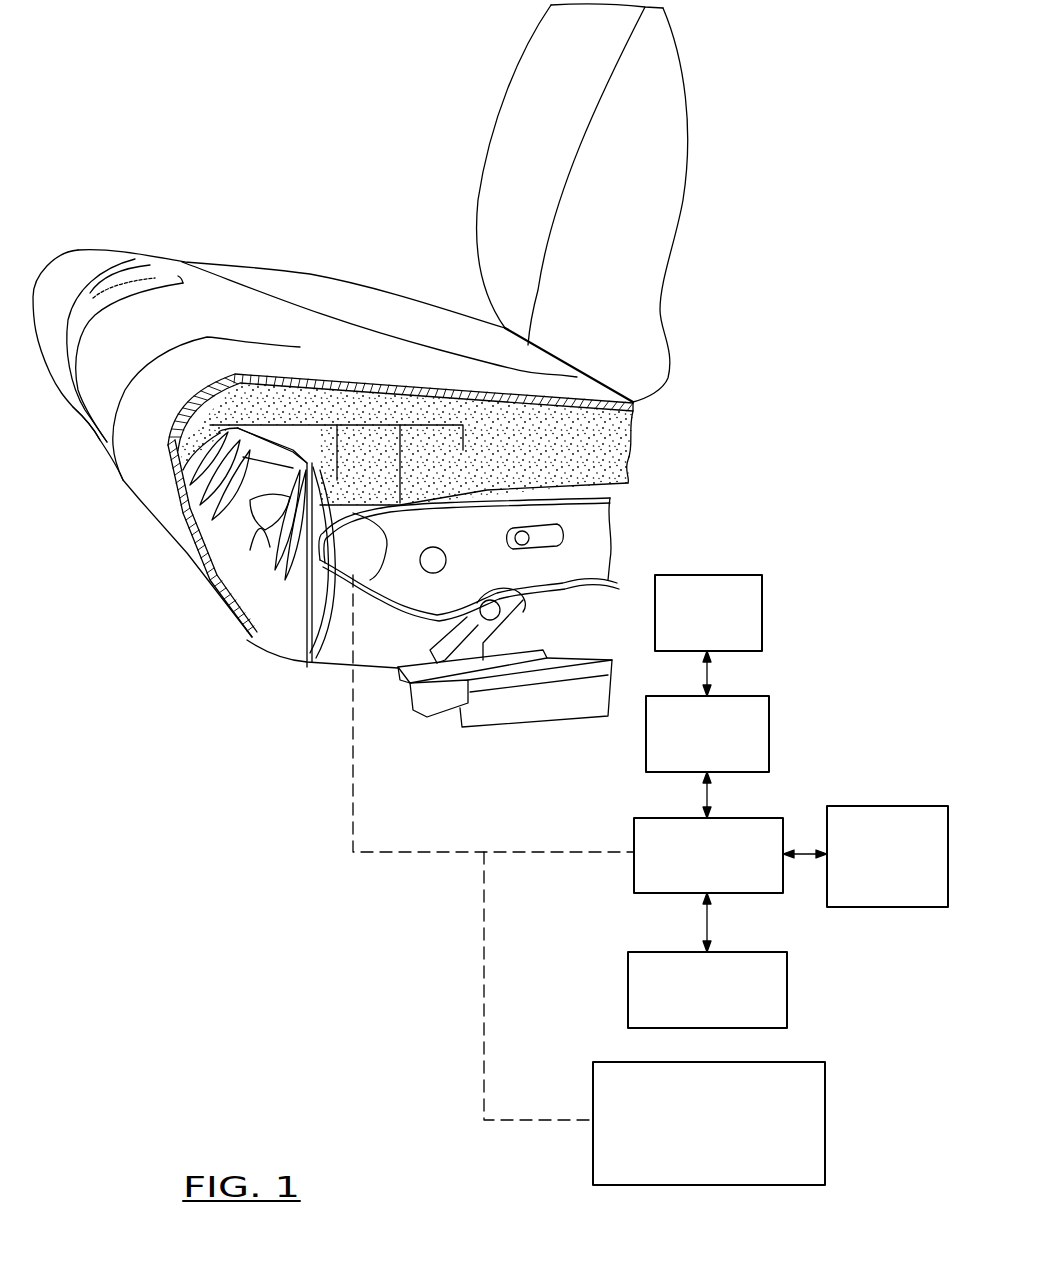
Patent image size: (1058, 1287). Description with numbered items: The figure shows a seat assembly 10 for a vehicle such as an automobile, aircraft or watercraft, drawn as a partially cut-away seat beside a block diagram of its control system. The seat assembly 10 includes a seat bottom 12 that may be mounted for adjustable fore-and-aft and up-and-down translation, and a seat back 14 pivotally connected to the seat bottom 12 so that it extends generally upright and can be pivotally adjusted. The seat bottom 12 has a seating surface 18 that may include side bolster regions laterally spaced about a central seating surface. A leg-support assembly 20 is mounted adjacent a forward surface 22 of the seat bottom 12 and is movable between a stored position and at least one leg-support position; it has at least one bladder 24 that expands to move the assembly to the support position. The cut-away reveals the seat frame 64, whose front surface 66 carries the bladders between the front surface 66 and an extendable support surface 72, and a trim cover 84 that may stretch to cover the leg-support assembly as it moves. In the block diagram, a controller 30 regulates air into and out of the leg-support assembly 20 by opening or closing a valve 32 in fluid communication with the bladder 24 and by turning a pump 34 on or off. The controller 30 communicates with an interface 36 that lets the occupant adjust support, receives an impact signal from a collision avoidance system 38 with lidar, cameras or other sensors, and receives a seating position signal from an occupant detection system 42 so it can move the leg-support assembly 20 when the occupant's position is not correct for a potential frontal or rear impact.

The seat assembly 10 is at (815, 119).
The seat bottom 12 is at (460, 367).
The seat back 14 is at (503, 107).
The seating surface 18 is at (300, 372).
The leg-support assembly 20 is at (98, 440).
The forward surface 22 is at (245, 322).
The bladder 24 is at (297, 573).
The controller 30 is at (783, 818).
The valve 32 is at (769, 696).
The pump 34 is at (762, 575).
The interface 36 is at (758, 950).
The collision avoidance system 38 is at (800, 1062).
The occupant detection system 42 is at (898, 806).
The seat frame 64 is at (477, 565).
The front surface 66 is at (293, 620).
The extendable support surface 72 is at (82, 263).
The trim cover 84 is at (208, 258).